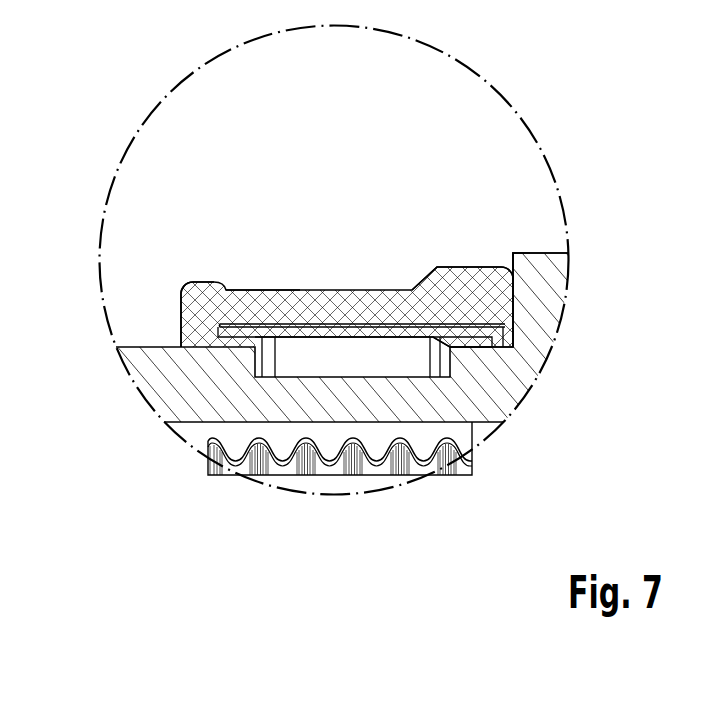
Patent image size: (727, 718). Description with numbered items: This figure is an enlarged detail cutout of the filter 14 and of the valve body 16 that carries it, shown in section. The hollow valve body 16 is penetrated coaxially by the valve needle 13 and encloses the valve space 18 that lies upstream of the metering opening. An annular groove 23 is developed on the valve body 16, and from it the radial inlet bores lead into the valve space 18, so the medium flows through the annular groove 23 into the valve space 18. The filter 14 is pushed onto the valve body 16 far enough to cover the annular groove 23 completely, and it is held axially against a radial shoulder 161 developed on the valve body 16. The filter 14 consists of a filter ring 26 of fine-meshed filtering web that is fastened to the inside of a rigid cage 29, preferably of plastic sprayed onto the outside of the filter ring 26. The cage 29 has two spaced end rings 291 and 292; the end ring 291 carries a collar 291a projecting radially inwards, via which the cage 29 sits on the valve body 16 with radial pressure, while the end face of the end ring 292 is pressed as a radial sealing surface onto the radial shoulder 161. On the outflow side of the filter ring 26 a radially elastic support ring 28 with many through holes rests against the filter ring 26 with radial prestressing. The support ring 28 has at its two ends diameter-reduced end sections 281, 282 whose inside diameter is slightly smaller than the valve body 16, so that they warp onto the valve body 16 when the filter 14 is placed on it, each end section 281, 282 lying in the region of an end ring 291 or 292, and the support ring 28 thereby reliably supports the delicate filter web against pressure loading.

The valve needle 13 is at (333, 486).
The filter 14 is at (302, 280).
The valve body 16 is at (537, 310).
The radial shoulder 161 is at (515, 266).
The valve space 18 is at (237, 437).
The annular groove 23 is at (490, 424).
The filter ring 26 is at (260, 289).
The support ring 28 is at (389, 332).
The end section 281 is at (233, 342).
The end section 282 is at (475, 343).
The cage 29 is at (341, 290).
The end ring 291 is at (203, 303).
The collar 291a is at (203, 331).
The end ring 292 is at (467, 288).